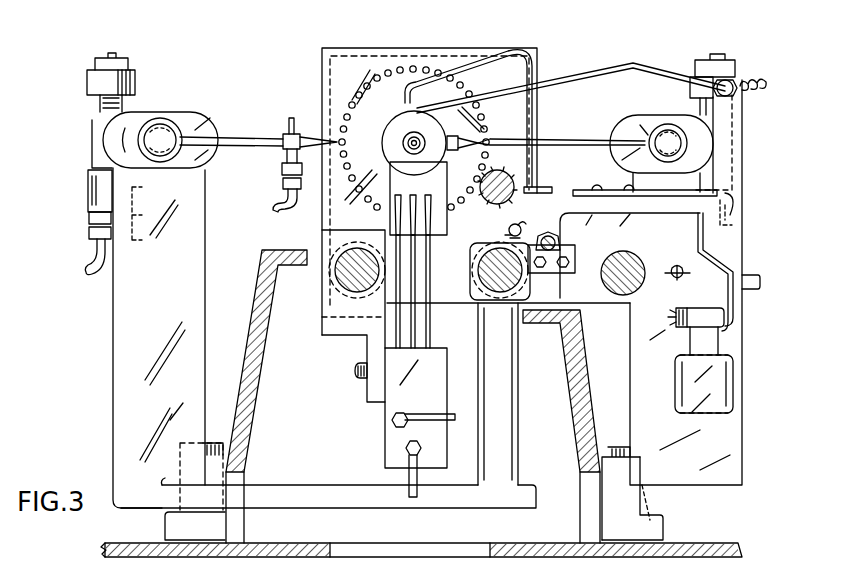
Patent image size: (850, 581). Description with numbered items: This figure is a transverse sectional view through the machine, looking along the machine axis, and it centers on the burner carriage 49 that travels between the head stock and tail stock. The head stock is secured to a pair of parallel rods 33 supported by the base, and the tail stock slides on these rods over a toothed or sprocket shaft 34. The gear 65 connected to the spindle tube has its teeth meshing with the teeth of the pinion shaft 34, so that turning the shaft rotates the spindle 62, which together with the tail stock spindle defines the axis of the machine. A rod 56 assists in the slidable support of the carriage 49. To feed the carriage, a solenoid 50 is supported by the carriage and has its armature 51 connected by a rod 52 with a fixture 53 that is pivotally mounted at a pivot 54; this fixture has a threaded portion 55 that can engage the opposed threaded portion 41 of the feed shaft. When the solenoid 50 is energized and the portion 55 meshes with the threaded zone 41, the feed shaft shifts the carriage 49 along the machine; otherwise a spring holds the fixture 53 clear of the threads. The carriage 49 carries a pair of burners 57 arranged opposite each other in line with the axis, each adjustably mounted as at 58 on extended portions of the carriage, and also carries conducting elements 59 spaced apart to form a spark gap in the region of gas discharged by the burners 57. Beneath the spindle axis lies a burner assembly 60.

The parallel rods 33 is at (348, 292).
The sprocket shaft 34 is at (507, 179).
The threaded portion of the feed shaft 41 is at (551, 271).
The burner carriage 49 is at (336, 223).
The solenoid 50 is at (714, 392).
The armature 51 is at (706, 335).
The rod 52 is at (733, 299).
The fixture 53 is at (645, 210).
The pivot 54 is at (508, 231).
The threaded portion 55 is at (560, 241).
The rod 56 is at (639, 262).
The burners 57 is at (250, 127).
The adjustable mounting 58 is at (139, 126).
The conducting elements 59 is at (562, 75).
The burner assembly 60 is at (415, 289).
The spindle 62 is at (408, 142).
The gear 65 is at (405, 57).